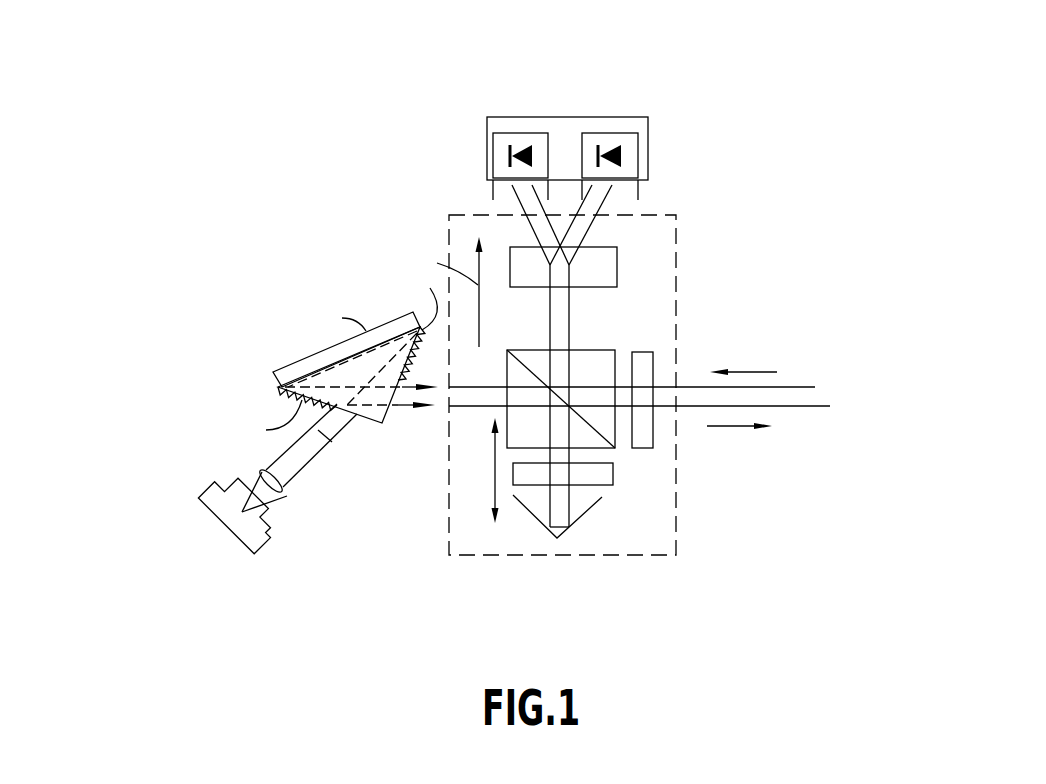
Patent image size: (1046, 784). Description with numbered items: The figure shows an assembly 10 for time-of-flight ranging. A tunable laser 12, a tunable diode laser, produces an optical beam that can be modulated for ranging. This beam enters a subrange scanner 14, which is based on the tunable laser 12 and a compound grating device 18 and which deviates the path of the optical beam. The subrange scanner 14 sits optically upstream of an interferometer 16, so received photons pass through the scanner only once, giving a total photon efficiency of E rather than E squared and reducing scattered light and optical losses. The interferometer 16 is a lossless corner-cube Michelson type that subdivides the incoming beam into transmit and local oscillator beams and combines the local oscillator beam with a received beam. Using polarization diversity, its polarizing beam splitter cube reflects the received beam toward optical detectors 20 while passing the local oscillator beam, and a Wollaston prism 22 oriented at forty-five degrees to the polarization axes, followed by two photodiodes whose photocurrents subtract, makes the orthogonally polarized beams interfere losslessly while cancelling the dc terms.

The assembly 10 is at (760, 71).
The tunable laser 12 is at (215, 515).
The subrange scanner 14 is at (256, 251).
The interferometer 16 is at (493, 555).
The compound grating device 18 is at (353, 373).
The optical detectors 20 is at (570, 116).
The Wollaston prism 22 is at (617, 265).